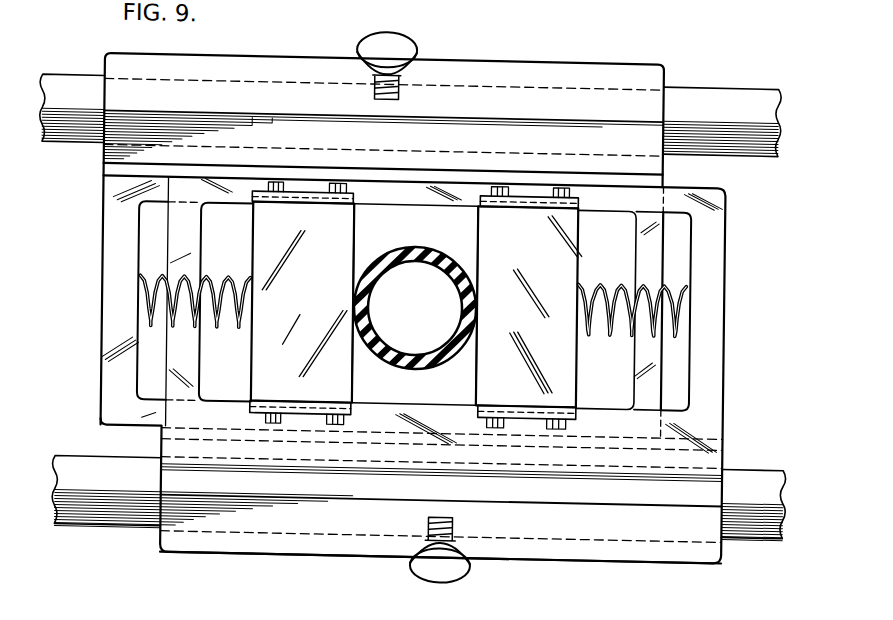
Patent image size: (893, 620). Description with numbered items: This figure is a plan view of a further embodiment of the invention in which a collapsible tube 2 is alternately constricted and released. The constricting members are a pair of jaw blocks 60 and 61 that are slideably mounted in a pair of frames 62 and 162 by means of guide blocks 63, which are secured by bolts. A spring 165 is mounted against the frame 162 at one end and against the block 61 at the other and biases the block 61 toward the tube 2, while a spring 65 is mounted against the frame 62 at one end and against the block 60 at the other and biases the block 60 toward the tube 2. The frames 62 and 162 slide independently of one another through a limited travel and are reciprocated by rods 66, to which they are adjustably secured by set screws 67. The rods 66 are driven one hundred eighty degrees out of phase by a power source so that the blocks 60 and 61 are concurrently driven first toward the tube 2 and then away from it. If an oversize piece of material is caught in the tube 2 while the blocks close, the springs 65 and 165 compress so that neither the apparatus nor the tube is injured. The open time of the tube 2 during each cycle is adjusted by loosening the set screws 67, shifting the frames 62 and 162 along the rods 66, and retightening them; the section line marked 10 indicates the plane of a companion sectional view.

The collapsible tube 2 is at (387, 249).
The section line 10- 10 is at (529, 605).
The jaw block 60 is at (336, 384).
The jaw block 61 is at (486, 229).
The frame 62 is at (103, 364).
The guide block 63 is at (349, 196).
The spring 65 is at (206, 279).
The rod 66 is at (714, 89).
The set screw 67 is at (426, 563).
The frame 162 is at (171, 253).
The spring 165 is at (603, 279).